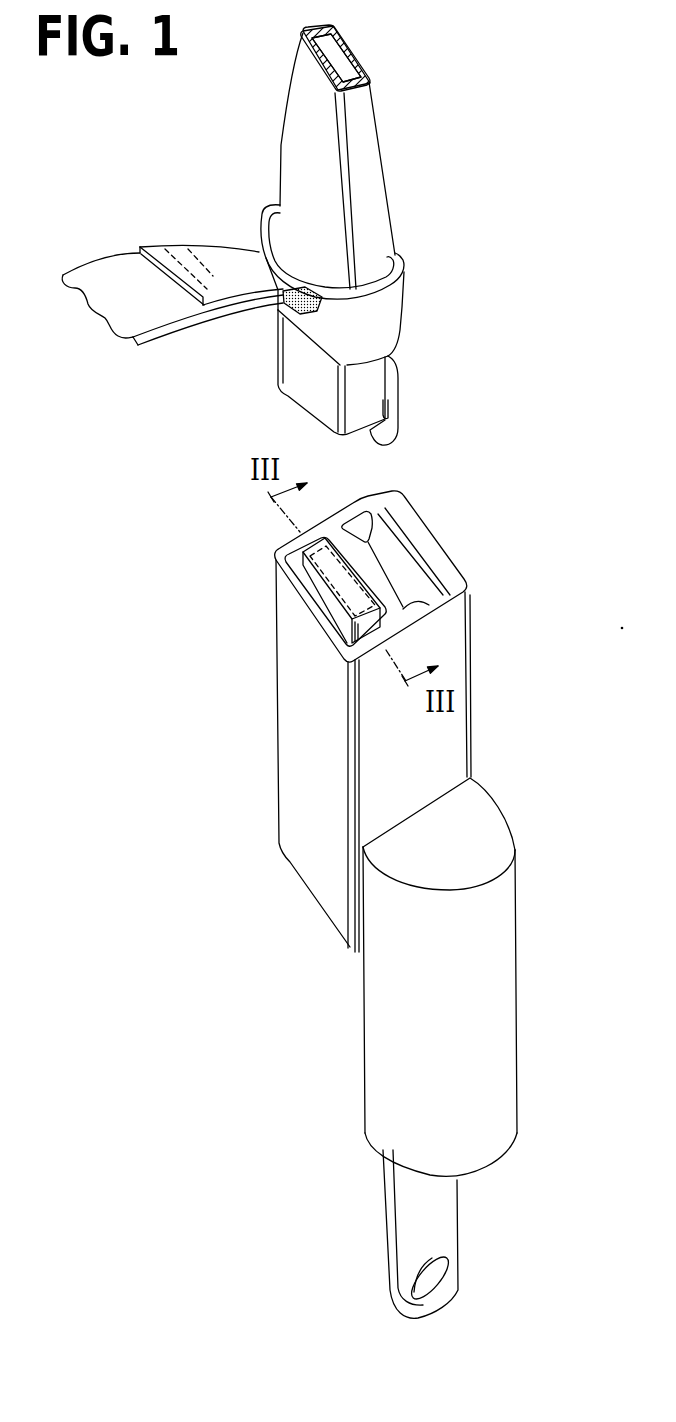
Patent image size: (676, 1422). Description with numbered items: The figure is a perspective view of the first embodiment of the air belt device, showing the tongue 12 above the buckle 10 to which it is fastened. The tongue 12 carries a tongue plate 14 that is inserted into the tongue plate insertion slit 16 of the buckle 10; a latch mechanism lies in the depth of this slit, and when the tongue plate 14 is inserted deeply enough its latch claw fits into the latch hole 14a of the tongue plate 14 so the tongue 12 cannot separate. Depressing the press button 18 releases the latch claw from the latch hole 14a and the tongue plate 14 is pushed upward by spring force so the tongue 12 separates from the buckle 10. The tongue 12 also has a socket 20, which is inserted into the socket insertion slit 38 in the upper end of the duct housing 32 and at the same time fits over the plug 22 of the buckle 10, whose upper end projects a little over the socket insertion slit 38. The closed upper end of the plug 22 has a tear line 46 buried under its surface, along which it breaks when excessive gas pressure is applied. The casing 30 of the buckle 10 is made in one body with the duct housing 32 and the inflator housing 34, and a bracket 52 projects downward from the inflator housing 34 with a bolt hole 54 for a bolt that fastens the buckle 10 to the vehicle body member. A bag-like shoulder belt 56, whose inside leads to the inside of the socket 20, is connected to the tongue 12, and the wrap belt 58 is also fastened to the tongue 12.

The buckle 10 is at (500, 697).
The tongue 12 is at (432, 295).
The tongue plate 14 is at (400, 377).
The latch hole 14a is at (400, 434).
The tongue plate insertion slit 16 is at (394, 573).
The press button 18 is at (410, 506).
The socket 20 is at (303, 387).
The plug 22 is at (303, 580).
The casing 30 is at (322, 888).
The duct housing 32 is at (278, 810).
The inflator housing 34 is at (512, 888).
The socket insertion slit 38 is at (323, 617).
The tear line 46 is at (310, 585).
The bracket 52 is at (384, 1177).
The bolt hole 54 is at (418, 1302).
The shoulder belt 56 is at (365, 157).
The wrap belt 58 is at (103, 272).